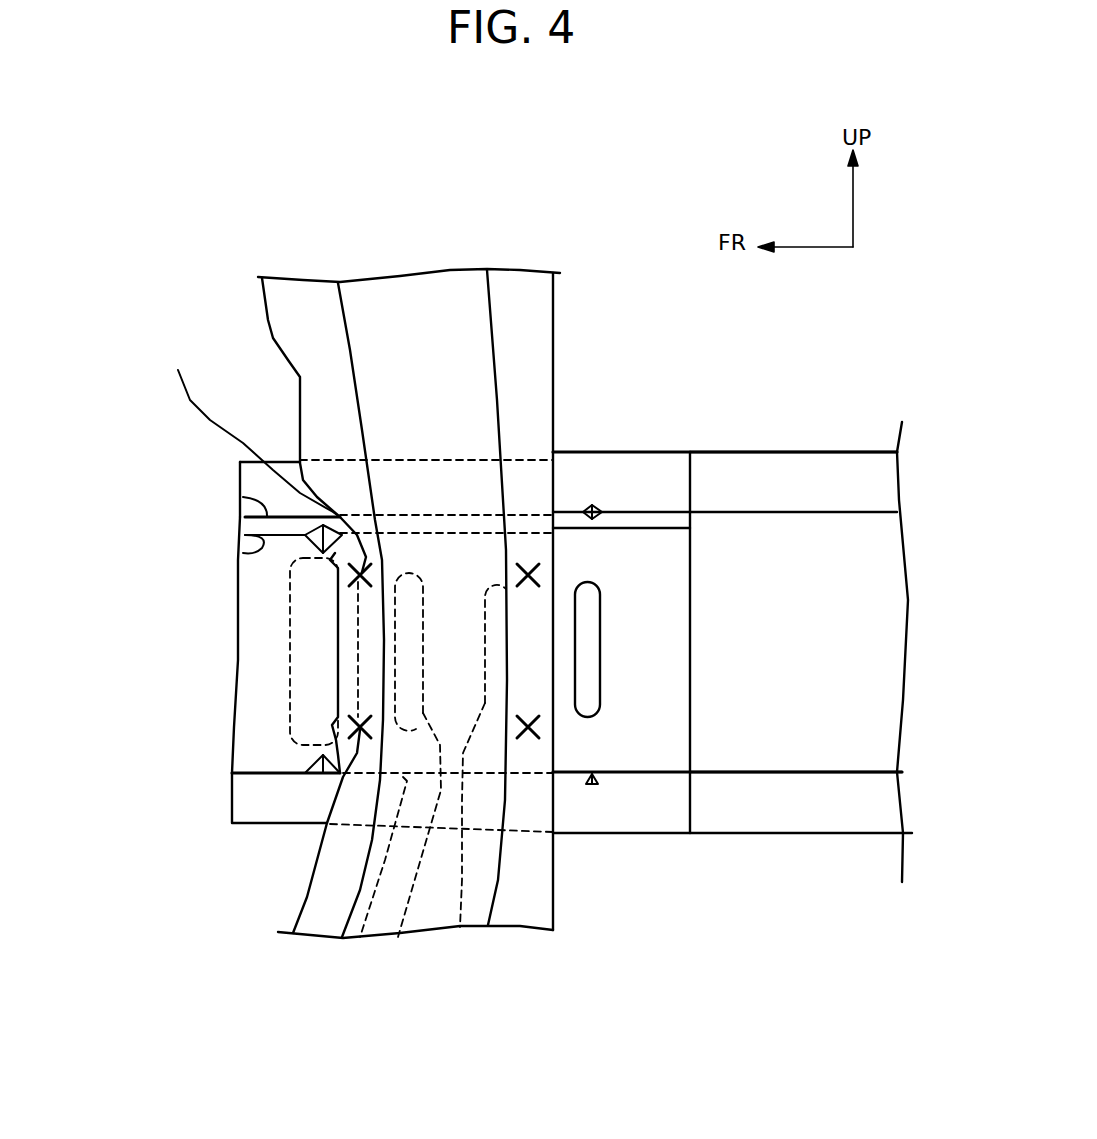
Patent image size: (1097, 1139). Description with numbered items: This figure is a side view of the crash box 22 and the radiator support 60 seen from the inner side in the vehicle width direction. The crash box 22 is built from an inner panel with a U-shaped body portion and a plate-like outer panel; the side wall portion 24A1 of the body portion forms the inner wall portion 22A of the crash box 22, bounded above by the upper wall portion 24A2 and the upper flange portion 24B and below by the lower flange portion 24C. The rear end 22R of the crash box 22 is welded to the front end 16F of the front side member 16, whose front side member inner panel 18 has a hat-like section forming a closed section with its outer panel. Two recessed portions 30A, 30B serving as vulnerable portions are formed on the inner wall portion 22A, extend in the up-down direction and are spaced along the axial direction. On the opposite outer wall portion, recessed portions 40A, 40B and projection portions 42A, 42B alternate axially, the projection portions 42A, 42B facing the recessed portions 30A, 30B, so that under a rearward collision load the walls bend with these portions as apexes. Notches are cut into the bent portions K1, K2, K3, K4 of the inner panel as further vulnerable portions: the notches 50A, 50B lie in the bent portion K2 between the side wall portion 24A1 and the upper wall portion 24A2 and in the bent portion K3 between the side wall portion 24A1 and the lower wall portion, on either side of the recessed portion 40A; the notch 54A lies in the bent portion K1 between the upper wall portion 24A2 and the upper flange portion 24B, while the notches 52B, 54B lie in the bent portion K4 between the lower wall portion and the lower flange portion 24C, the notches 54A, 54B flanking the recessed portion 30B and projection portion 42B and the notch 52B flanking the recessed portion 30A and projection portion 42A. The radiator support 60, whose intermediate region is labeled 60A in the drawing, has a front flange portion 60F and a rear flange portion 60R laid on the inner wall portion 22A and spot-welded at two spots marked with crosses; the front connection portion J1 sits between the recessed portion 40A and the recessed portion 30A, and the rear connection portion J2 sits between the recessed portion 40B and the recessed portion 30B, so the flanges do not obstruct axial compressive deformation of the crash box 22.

The front side member 16 is at (873, 617).
The front end 16F is at (793, 407).
The front side member inner panel 18 is at (796, 822).
The crash box 22 is at (732, 571).
The inner wall portion 22A is at (223, 645).
The rear end 22R is at (682, 606).
The side wall portion 24A1 is at (223, 645).
The upper wall portion 24A2 is at (206, 517).
The upper flange portion 24B is at (248, 428).
The lower flange portion 24C is at (259, 853).
The recessed portion 30A is at (400, 827).
The recessed portion 30B is at (641, 766).
The recessed portion 40A is at (242, 651).
The recessed portion 40B is at (458, 795).
The projection portion 42A is at (400, 827).
The projection portion 42B is at (641, 766).
The notch 50A is at (235, 583).
The notch 50B is at (236, 775).
The notch 52B is at (361, 894).
The notch 54A is at (426, 463).
The notch 54B is at (471, 839).
The radiator support 60 is at (449, 594).
The rocker side wall 60A is at (400, 563).
The front flange portion 60F is at (314, 557).
The rear flange portion 60R is at (515, 553).
The front connection portion J1 is at (313, 650).
The rear connection portion J2 is at (558, 689).
The bent portion K1 is at (205, 477).
The bent portion K2 is at (200, 547).
The bent portion K3 is at (199, 844).
The bent portion K4 is at (199, 844).